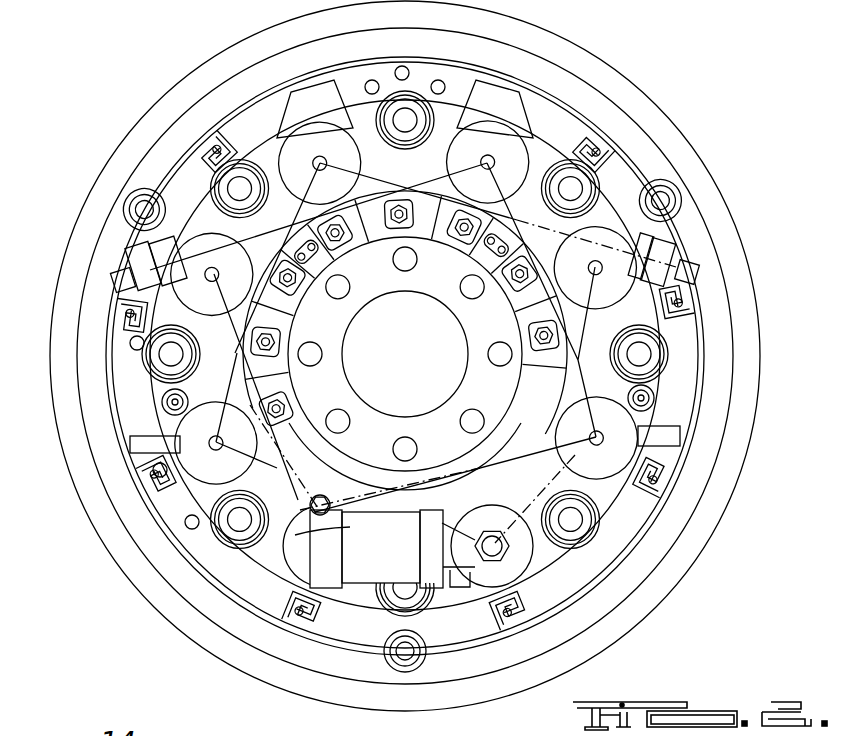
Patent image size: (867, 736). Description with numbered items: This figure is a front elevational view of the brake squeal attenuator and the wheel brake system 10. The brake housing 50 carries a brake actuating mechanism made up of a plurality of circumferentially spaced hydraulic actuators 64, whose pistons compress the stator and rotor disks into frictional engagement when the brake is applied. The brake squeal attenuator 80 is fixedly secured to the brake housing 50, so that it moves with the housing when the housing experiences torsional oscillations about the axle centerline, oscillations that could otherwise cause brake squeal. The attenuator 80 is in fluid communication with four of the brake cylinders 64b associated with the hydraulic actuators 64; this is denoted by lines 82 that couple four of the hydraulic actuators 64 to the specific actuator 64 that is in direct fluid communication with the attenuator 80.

The wheel brake system 10 is at (94, 104).
The brake housing 50 is at (258, 486).
The lines 82 is at (530, 431).
The hydraulic actuators 64 is at (285, 100).
The brake squeal attenuator 80 is at (353, 590).
The cylinders 64b is at (485, 575).